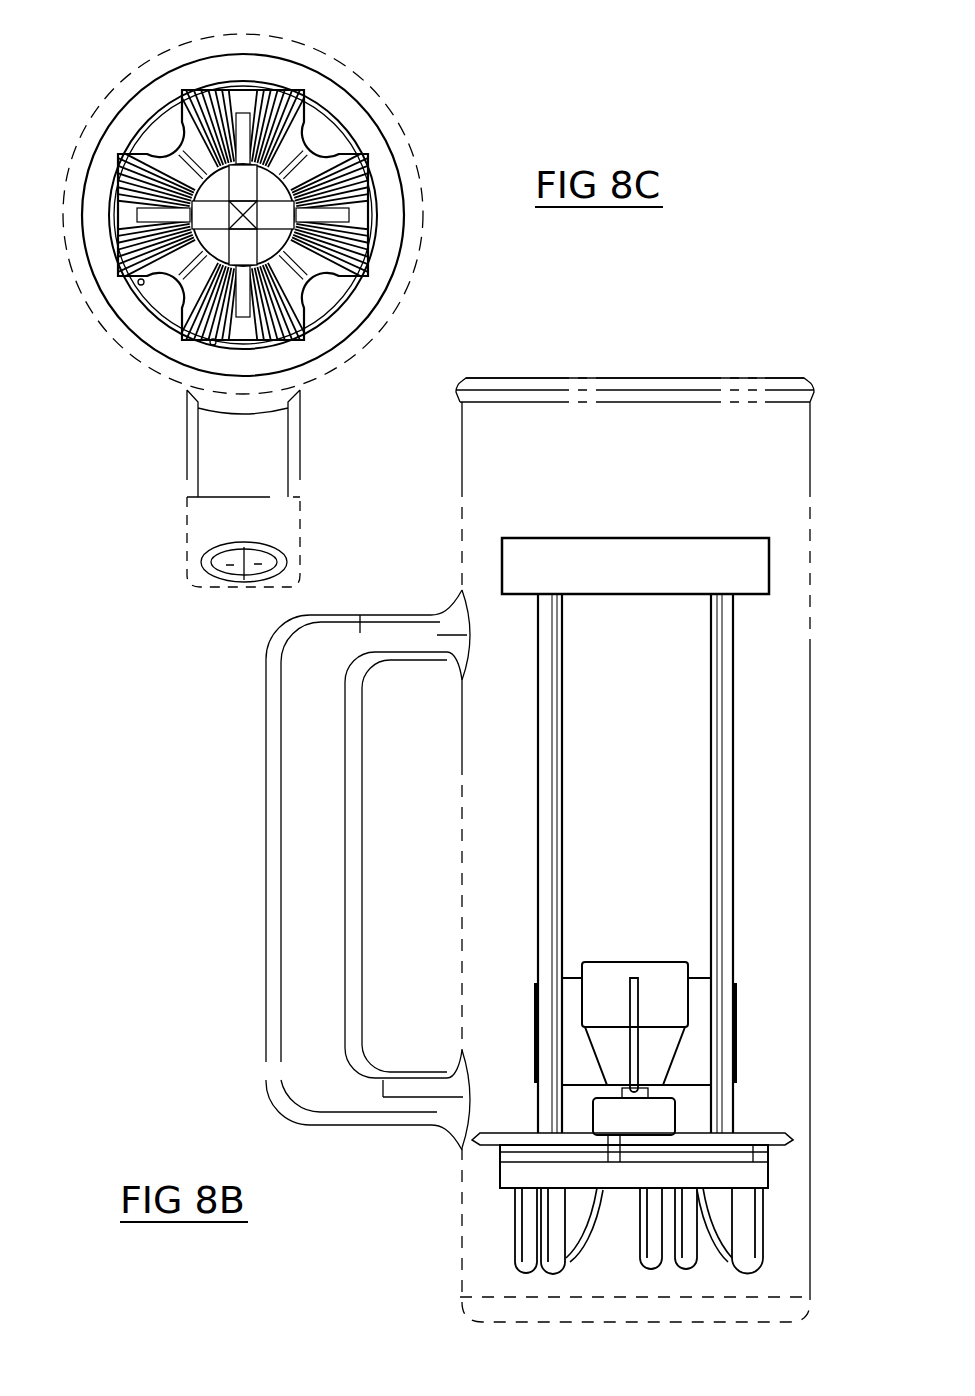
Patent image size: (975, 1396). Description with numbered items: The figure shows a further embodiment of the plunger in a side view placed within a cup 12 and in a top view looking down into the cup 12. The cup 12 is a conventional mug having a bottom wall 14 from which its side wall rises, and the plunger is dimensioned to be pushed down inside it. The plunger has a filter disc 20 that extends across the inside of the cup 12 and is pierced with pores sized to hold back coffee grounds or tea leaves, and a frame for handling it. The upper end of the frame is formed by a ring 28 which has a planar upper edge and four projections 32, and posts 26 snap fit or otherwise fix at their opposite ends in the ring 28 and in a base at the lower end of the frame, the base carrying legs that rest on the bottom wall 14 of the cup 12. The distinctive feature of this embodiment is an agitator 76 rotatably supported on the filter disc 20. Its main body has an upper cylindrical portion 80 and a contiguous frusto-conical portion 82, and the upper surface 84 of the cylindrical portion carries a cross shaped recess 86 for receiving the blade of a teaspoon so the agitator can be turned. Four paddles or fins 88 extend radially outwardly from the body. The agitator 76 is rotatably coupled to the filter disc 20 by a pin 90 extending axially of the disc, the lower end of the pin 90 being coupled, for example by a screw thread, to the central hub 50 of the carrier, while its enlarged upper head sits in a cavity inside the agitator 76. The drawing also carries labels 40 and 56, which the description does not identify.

In FIG. 8C, the cup 12 is at (368, 348).
In FIG. 8B, the cup 12 is at (462, 527).
In FIG. 8B, the bottom wall 14 is at (522, 1312).
In FIG. 8B, the filter disc 20 is at (795, 1136).
In FIG. 8B, the posts 26 is at (552, 754).
In FIG. 8C, the ring 28 is at (370, 228).
In FIG. 8B, the ring 28 is at (718, 568).
In FIG. 8C, the projections 32 is at (320, 148).
In FIG. 8C, the bristles 40 is at (370, 185).
In FIG. 8B, the central hub 50 is at (665, 1112).
In FIG. 8C, the flange ring 56 is at (370, 297).
In FIG. 8B, the flange ring 56 is at (795, 1147).
In FIG. 8B, the agitator 76 is at (572, 921).
In FIG. 8B, the upper cylindrical portion 80 is at (661, 1005).
In FIG. 8B, the frusto-conical portion 82 is at (662, 1048).
In FIG. 8C, the upper surface 84 is at (213, 192).
In FIG. 8B, the upper surface 84 is at (665, 965).
In FIG. 8C, the cross shaped recess 86 is at (243, 185).
In FIG. 8C, the fins 88 is at (141, 285).
In FIG. 8B, the fins 88 is at (735, 1015).
In FIG. 8B, the pin 90 is at (633, 1089).